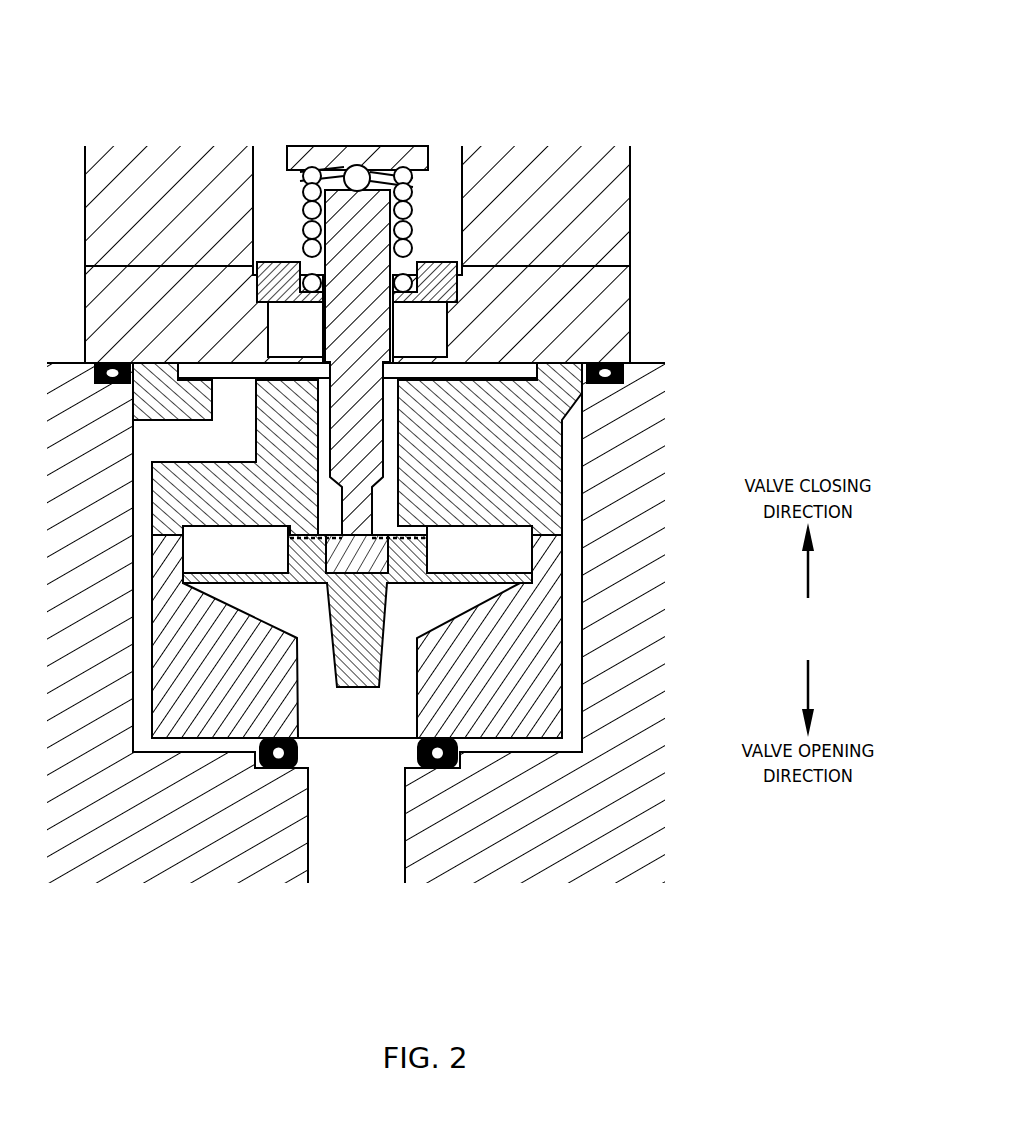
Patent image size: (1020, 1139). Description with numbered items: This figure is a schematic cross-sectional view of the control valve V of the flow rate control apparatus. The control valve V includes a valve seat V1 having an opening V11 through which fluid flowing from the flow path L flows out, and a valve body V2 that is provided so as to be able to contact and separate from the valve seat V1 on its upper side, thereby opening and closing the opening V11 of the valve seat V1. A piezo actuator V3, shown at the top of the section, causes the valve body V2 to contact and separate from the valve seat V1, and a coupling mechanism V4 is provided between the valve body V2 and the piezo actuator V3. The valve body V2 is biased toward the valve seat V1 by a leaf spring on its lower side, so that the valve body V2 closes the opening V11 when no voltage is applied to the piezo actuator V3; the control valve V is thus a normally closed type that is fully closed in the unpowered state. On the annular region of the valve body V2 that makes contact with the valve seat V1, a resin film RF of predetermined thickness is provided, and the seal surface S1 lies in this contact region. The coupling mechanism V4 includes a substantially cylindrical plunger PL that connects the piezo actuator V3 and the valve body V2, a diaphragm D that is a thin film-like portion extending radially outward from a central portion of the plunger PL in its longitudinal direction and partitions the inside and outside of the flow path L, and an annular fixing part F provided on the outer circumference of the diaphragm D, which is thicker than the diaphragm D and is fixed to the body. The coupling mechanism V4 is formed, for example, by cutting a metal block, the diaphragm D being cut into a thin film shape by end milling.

The control valve V is at (693, 162).
The piezo actuator V3 is at (360, 137).
The coupling mechanism V4 is at (448, 276).
The diaphragm D is at (407, 358).
The fixing part F is at (632, 317).
The plunger PL is at (385, 407).
The opening V11 is at (389, 525).
The valve body V2 is at (427, 553).
The seal surface S1 is at (432, 542).
The resin film RF is at (310, 538).
The valve seat V1 is at (310, 540).
The flow path L is at (347, 832).